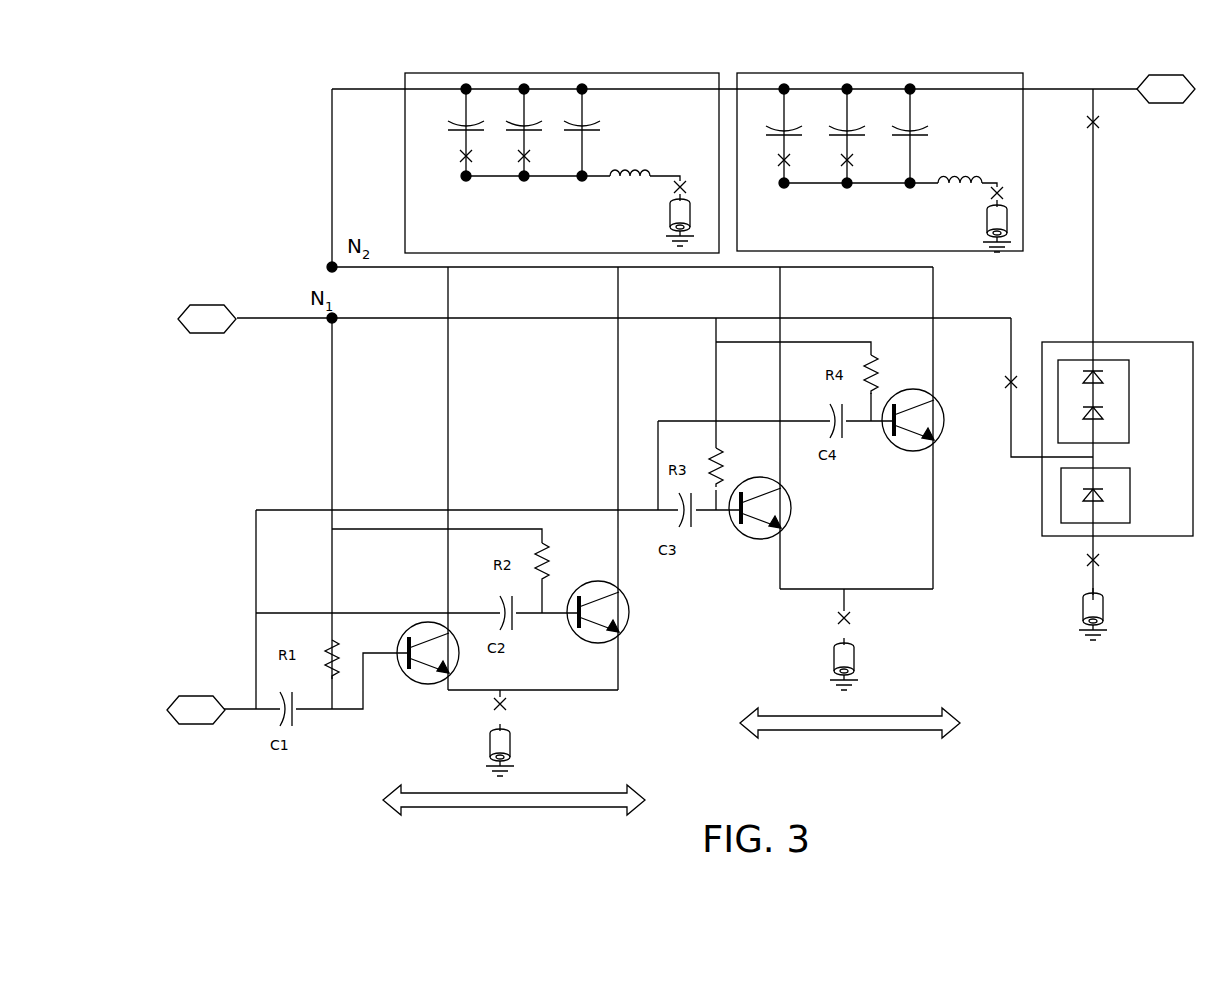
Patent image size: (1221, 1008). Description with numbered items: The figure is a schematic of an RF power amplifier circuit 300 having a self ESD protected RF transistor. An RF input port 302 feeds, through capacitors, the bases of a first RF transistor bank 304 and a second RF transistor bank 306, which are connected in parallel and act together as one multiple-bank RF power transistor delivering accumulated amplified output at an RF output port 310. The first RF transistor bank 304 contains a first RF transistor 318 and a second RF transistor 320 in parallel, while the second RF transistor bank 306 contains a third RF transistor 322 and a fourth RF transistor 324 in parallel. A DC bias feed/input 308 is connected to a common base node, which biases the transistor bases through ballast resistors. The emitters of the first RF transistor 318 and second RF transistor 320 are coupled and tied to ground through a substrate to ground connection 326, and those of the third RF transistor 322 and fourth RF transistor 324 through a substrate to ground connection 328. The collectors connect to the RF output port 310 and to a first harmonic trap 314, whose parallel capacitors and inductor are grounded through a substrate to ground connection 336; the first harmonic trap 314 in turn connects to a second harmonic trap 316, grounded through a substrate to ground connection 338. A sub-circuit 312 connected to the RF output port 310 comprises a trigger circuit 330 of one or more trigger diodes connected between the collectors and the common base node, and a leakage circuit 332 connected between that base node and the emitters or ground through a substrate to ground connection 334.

The RF power amplifier circuit 300 is at (276, 152).
The RF input port 302 is at (168, 710).
The first RF transistor bank 304 is at (438, 790).
The second RF transistor bank 306 is at (800, 712).
The DC bias feed/input 308 is at (205, 305).
The RF output port 310 is at (1165, 102).
The sub-circuit 312 is at (1117, 326).
The first harmonic trap 314 is at (528, 163).
The second harmonic trap 316 is at (908, 162).
The first RF transistor 318 is at (420, 683).
The second RF transistor 320 is at (630, 612).
The third RF transistor 322 is at (795, 510).
The fourth RF transistor 324 is at (943, 420).
The substrate to ground connection 326 is at (510, 750).
The substrate to ground connection 328 is at (855, 655).
The trigger circuit 330 is at (1129, 400).
The leakage circuit 332 is at (1130, 490).
The substrate to ground connection 334 is at (1085, 628).
The substrate to ground connection 336 is at (670, 218).
The substrate to ground connection 338 is at (985, 222).